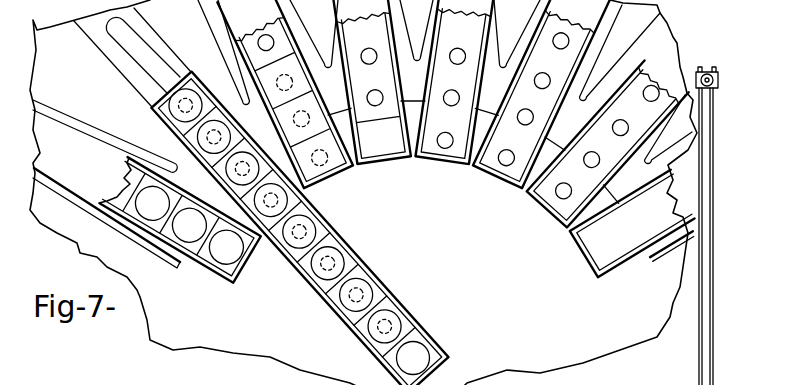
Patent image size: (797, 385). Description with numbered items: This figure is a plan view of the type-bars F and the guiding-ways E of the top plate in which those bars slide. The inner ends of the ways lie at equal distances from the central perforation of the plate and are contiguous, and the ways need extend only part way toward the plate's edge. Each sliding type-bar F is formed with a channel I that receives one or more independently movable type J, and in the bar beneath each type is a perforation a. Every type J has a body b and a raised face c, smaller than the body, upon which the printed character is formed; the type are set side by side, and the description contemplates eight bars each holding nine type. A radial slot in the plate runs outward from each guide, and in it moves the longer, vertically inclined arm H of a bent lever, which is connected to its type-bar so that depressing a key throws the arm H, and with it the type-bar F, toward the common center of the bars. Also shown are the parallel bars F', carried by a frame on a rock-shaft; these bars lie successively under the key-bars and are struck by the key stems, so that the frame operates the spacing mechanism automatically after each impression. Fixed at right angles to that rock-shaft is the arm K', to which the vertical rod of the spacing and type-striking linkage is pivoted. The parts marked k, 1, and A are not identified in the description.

The tray / receptacle E is at (313, 94).
The type-bar F is at (452, 145).
The parallel bars F' is at (324, 101).
The perforation a is at (460, 51).
The tray compartment 1 is at (524, 125).
The channel I is at (105, 96).
The key / tongue k is at (132, 57).
The type J is at (147, 220).
The raised face c is at (396, 278).
The longer arm of bent lever H is at (226, 247).
The body b is at (356, 261).
The central carrier A is at (413, 358).
The arm K' is at (721, 226).